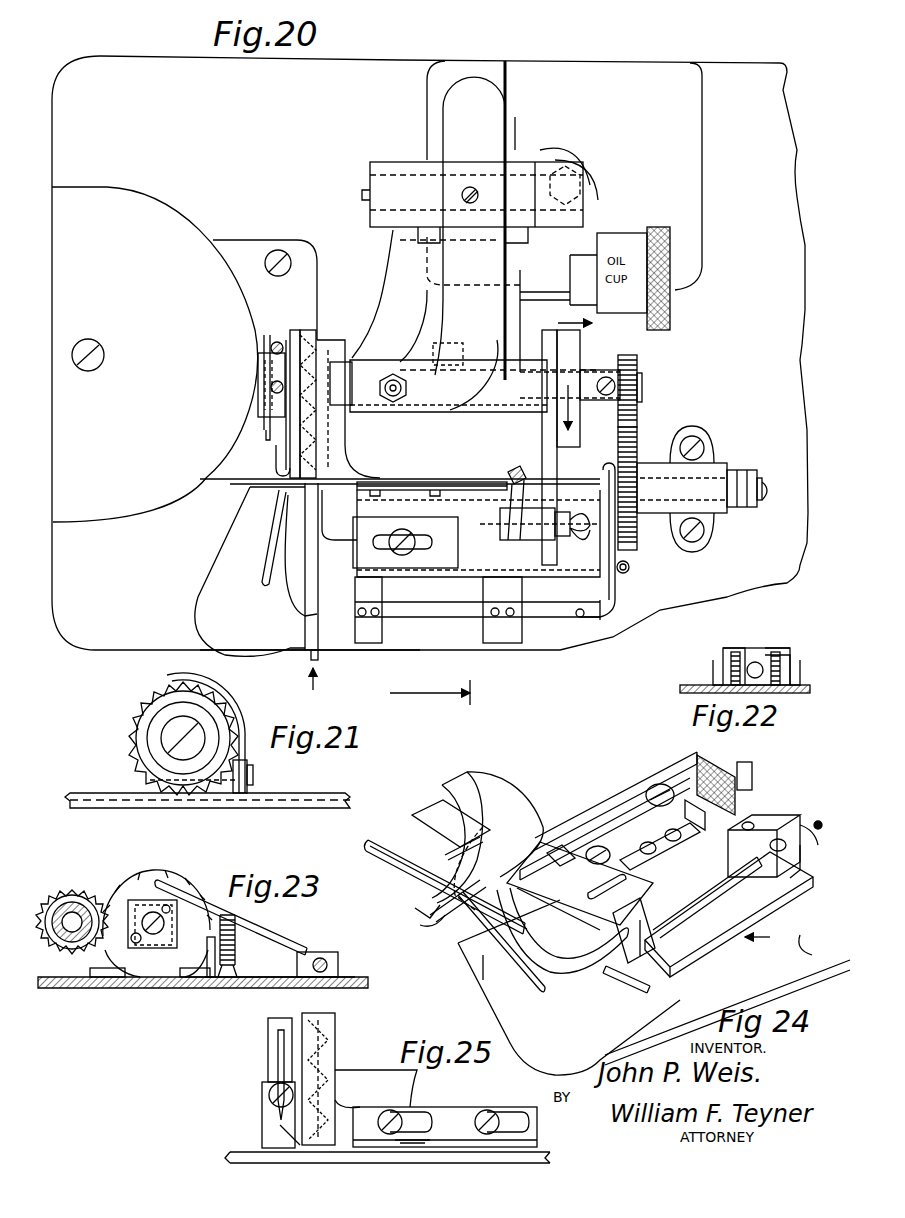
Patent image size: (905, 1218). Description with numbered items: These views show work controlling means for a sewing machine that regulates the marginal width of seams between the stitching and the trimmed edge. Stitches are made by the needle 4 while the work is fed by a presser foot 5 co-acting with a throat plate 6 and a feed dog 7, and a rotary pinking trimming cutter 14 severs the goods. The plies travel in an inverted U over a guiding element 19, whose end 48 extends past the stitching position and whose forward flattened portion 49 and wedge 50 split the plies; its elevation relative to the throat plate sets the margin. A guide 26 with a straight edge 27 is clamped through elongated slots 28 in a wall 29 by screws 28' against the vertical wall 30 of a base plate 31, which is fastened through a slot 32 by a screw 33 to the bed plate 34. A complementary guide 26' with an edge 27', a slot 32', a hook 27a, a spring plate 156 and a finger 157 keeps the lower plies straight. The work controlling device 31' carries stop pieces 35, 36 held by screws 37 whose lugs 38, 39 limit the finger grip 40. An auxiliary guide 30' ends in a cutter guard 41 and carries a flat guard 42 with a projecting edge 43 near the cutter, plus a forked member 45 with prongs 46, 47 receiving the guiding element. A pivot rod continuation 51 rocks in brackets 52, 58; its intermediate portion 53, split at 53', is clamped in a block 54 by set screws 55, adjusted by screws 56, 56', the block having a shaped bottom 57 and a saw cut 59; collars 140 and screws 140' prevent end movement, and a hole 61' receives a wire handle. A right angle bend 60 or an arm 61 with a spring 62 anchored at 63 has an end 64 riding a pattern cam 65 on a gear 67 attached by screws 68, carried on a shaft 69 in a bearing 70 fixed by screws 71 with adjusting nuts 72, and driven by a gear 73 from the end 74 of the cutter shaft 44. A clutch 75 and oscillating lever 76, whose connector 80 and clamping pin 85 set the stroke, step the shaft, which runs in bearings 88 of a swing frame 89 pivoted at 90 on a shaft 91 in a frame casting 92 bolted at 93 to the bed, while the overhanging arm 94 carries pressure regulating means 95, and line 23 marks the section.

In FIG. 25, the needle 4 is at (278, 1068).
In FIG. 20, the presser foot 5 is at (260, 378).
In FIG. 25, the presser foot 5 is at (262, 1120).
In FIG. 20, the throat plate 6 is at (312, 280).
In FIG. 20, the feed dog 7 is at (262, 428).
In FIG. 21, the trimming cutter 14 is at (110, 752).
In FIG. 20, the guiding element 19 is at (286, 435).
In FIG. 24, the guiding element 19 is at (415, 868).
In FIG. 20, the section line 23 is at (491, 507).
In FIG. 20, the guide 26 is at (338, 515).
In FIG. 21, the guide 26 is at (228, 798).
In FIG. 24, the guide 26 is at (483, 866).
In FIG. 20, the complementary guide 26' is at (176, 568).
In FIG. 24, the complementary guide 26' is at (467, 1020).
In FIG. 24, the straight edge 27 is at (444, 849).
In FIG. 24, the complementary straight edge 27' is at (616, 999).
In FIG. 24, the hook 27a is at (727, 1012).
In FIG. 24, the elongated slots 28 is at (608, 842).
In FIG. 25, the elongated slots 28 is at (453, 1106).
In FIG. 20, the screws 28' is at (405, 501).
In FIG. 24, the screws 28' is at (603, 800).
In FIG. 24, the wall 29 is at (590, 810).
In FIG. 20, the vertical wall 30 is at (432, 472).
In FIG. 23, the vertical wall 30 is at (215, 931).
In FIG. 24, the vertical wall 30 is at (605, 829).
In FIG. 20, the auxiliary guide 30' is at (432, 468).
In FIG. 24, the auxiliary guide 30' is at (616, 793).
In FIG. 20, the base plate 31 is at (478, 533).
In FIG. 23, the base plate 31 is at (280, 960).
In FIG. 24, the base plate 31 is at (729, 914).
In FIG. 25, the base plate 31 is at (465, 1127).
In FIG. 20, the work controlling device 31' is at (326, 686).
In FIG. 24, the work controlling device 31' is at (776, 939).
In FIG. 20, the elongated slot 32 is at (405, 542).
In FIG. 24, the elongated slot 32 is at (592, 886).
In FIG. 20, the slot 32' is at (376, 530).
In FIG. 20, the bolt or screw 33 is at (410, 552).
In FIG. 25, the bolt or screw 33 is at (420, 1140).
In FIG. 20, the bed plate 34 is at (295, 650).
In FIG. 21, the bed plate 34 is at (325, 808).
In FIG. 23, the bed plate 34 is at (70, 988).
In FIG. 24, the bed plate 34 is at (810, 950).
In FIG. 25, the bed plate 34 is at (550, 1158).
In FIG. 24, the stop piece 35 is at (668, 855).
In FIG. 24, the stop piece 36 is at (698, 830).
In FIG. 24, the screws 37 is at (612, 880).
In FIG. 24, the stop lug 38 is at (752, 770).
In FIG. 24, the stop lug 39 is at (710, 780).
In FIG. 24, the finger grip 40 is at (745, 815).
In FIG. 20, the cutter guard 41 is at (310, 340).
In FIG. 21, the cutter guard 41 is at (225, 705).
In FIG. 24, the cutter guard 41 is at (488, 795).
In FIG. 25, the cutter guard 41 is at (330, 1040).
In FIG. 20, the flat guard 42 is at (338, 435).
In FIG. 21, the flat guard 42 is at (180, 793).
In FIG. 24, the flat guard 42 is at (451, 823).
In FIG. 24, the projecting edge 43 is at (412, 820).
In FIG. 20, the cutter shaft 44 is at (340, 370).
In FIG. 25, the cutter shaft 44 is at (355, 1075).
In FIG. 20, the forked member 45 is at (305, 490).
In FIG. 24, the forked member 45 is at (470, 888).
In FIG. 25, the forked member 45 is at (280, 1130).
In FIG. 20, the prong 46 is at (276, 462).
In FIG. 24, the prong 46 is at (427, 921).
In FIG. 24, the prong 47 is at (495, 892).
In FIG. 20, the end of guiding element 48 is at (297, 345).
In FIG. 24, the end of guiding element 48 is at (372, 850).
In FIG. 20, the flattened portion 49 is at (290, 600).
In FIG. 24, the flattened portion 49 is at (563, 967).
In FIG. 20, the wedge portion 50 is at (268, 560).
In FIG. 24, the wedge portion 50 is at (535, 985).
In FIG. 20, the pivot rod continuation 51 is at (345, 610).
In FIG. 24, the pivot rod continuation 51 is at (583, 967).
In FIG. 20, the bracket 52 is at (327, 642).
In FIG. 24, the bracket 52 is at (640, 962).
In FIG. 20, the intermediate portion 53 is at (477, 622).
In FIG. 24, the intermediate portion 53 is at (707, 897).
In FIG. 20, the split 53' is at (497, 581).
In FIG. 24, the block 54 is at (765, 877).
In FIG. 22, the set screws 55 is at (757, 660).
In FIG. 24, the set screws 55 is at (759, 822).
In FIG. 22, the adjusting screw 56 is at (790, 655).
In FIG. 24, the adjusting screw 56 is at (788, 840).
In FIG. 22, the adjusting screw 56' is at (734, 653).
In FIG. 24, the adjusting screw 56' is at (809, 790).
In FIG. 22, the shaped bottom 57 is at (792, 685).
In FIG. 20, the bracket 58 is at (525, 617).
In FIG. 22, the bracket 58 is at (723, 668).
In FIG. 23, the bracket 58 is at (338, 962).
In FIG. 24, the bracket 58 is at (798, 880).
In FIG. 24, the saw cut 59 is at (803, 819).
In FIG. 20, the right angle bend 60 is at (602, 622).
In FIG. 20, the extending arm 61 is at (634, 587).
In FIG. 23, the extending arm 61 is at (311, 944).
In FIG. 24, the extending arm 61 is at (823, 809).
In FIG. 20, the hole 61' is at (583, 604).
In FIG. 20, the spring 62 is at (630, 566).
In FIG. 23, the spring 62 is at (238, 935).
In FIG. 23, the spring attachment 63 is at (227, 977).
In FIG. 20, the extending end 64 is at (603, 480).
In FIG. 23, the extending end 64 is at (170, 884).
In FIG. 20, the pattern cam 65 is at (612, 455).
In FIG. 23, the pattern cam 65 is at (160, 945).
In FIG. 20, the gear 67 is at (637, 445).
In FIG. 23, the gear 67 is at (133, 885).
In FIG. 23, the screws 68 is at (133, 945).
In FIG. 20, the shaft 69 is at (772, 506).
In FIG. 20, the bearing 70 is at (705, 468).
In FIG. 23, the bearing 70 is at (135, 960).
In FIG. 20, the screws 71 is at (705, 532).
In FIG. 20, the collar and adjusting nuts 72 is at (740, 468).
In FIG. 20, the gear 73 is at (637, 368).
In FIG. 23, the gear 73 is at (65, 895).
In FIG. 20, the end of cutter shaft 74 is at (643, 390).
In FIG. 23, the end of cutter shaft 74 is at (80, 908).
In FIG. 20, the clutch 75 is at (575, 355).
In FIG. 20, the oscillating lever 76 is at (545, 430).
In FIG. 20, the connector 80 is at (520, 466).
In FIG. 20, the clamping pin 85 is at (545, 535).
In FIG. 20, the bearings 88 is at (365, 412).
In FIG. 20, the swing frame 89 is at (389, 296).
In FIG. 20, the pivot 90 is at (385, 185).
In FIG. 20, the shaft 91 is at (370, 180).
In FIG. 20, the frame casting 92 is at (455, 185).
In FIG. 20, the bolt 93 is at (575, 170).
In FIG. 20, the overhanging arm 94 is at (474, 359).
In FIG. 20, the pressure regulating means 95 is at (407, 384).
In FIG. 20, the collars 140 is at (438, 609).
In FIG. 20, the screws 140' is at (435, 668).
In FIG. 20, the spring plate 156 is at (226, 631).
In FIG. 24, the spring plate 156 is at (546, 1044).
In FIG. 20, the finger 157 is at (240, 515).
In FIG. 24, the finger 157 is at (470, 950).